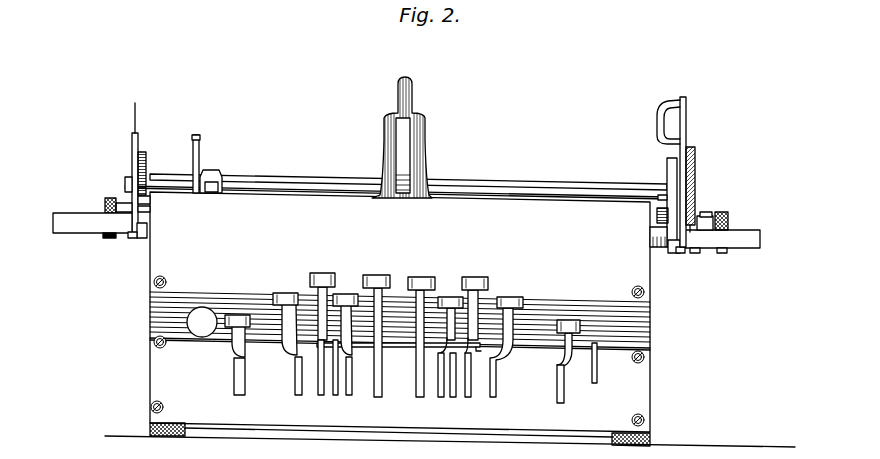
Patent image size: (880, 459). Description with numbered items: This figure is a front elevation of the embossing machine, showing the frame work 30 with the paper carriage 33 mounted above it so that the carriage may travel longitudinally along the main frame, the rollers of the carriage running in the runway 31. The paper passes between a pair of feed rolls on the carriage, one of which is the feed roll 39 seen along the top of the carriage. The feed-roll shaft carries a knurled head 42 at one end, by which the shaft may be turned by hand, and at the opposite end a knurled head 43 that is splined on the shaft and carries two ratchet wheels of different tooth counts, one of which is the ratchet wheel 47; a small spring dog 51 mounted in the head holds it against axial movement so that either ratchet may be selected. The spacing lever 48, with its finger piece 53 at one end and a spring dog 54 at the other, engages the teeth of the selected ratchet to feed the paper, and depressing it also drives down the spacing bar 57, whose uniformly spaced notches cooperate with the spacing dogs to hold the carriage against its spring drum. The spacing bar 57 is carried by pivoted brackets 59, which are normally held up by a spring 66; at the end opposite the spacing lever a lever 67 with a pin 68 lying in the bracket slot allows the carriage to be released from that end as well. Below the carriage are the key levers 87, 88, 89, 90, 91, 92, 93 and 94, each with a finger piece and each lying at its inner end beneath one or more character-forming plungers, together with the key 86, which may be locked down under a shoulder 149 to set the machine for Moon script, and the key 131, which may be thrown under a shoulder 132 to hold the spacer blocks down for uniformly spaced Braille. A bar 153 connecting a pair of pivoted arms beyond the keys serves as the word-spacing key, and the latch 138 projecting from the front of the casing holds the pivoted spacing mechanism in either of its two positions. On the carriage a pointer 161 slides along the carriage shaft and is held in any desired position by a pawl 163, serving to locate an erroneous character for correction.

The frame work 30 is at (155, 292).
The runway 31 is at (67, 228).
The paper carriage 33 is at (146, 150).
The feed roll 39 is at (290, 176).
The knurled head 42 is at (106, 199).
The knurled head 43 is at (727, 213).
The ratchet wheel 47 is at (695, 212).
The spacing lever 48 is at (686, 128).
The spring dog 51 is at (710, 215).
The finger piece 53 is at (656, 117).
The spring dog 54 is at (700, 253).
The spacing bar 57 is at (140, 234).
The brackets 59 is at (128, 236).
The spring 66 is at (660, 208).
The lever 67 is at (135, 103).
The pin 68 is at (125, 180).
The key 86 is at (237, 315).
The key lever 87 is at (287, 293).
The key lever 88 is at (323, 273).
The key lever 89 is at (346, 294).
The key lever 90 is at (378, 275).
The key lever 91 is at (419, 277).
The key lever 92 is at (450, 297).
The key lever 93 is at (477, 282).
The key lever 94 is at (511, 298).
The key 131 is at (569, 320).
The shoulder 132 is at (562, 380).
The latch 138 is at (598, 375).
The shoulder 149 is at (234, 363).
The bar 153 is at (409, 346).
The pointer 161 is at (215, 170).
The pawl 163 is at (199, 134).